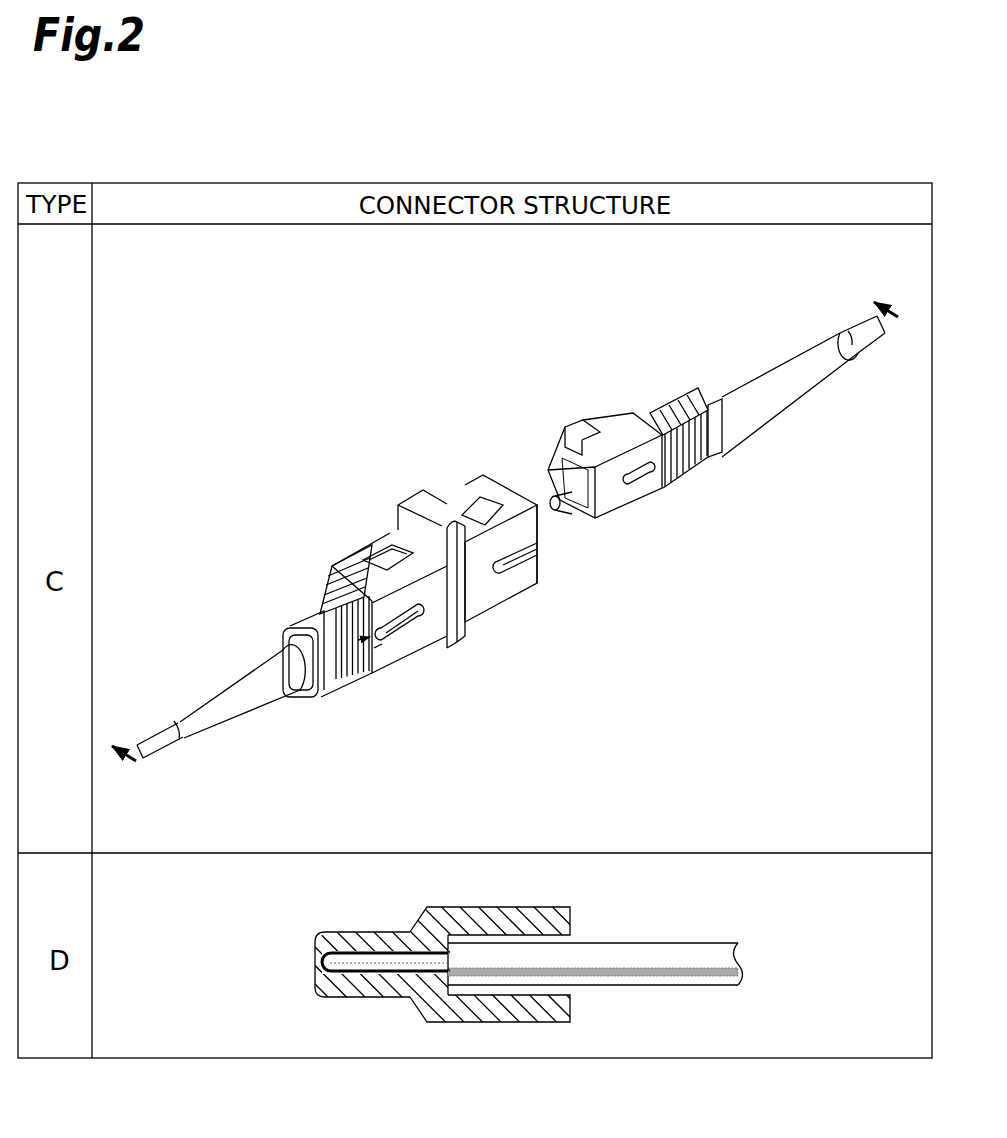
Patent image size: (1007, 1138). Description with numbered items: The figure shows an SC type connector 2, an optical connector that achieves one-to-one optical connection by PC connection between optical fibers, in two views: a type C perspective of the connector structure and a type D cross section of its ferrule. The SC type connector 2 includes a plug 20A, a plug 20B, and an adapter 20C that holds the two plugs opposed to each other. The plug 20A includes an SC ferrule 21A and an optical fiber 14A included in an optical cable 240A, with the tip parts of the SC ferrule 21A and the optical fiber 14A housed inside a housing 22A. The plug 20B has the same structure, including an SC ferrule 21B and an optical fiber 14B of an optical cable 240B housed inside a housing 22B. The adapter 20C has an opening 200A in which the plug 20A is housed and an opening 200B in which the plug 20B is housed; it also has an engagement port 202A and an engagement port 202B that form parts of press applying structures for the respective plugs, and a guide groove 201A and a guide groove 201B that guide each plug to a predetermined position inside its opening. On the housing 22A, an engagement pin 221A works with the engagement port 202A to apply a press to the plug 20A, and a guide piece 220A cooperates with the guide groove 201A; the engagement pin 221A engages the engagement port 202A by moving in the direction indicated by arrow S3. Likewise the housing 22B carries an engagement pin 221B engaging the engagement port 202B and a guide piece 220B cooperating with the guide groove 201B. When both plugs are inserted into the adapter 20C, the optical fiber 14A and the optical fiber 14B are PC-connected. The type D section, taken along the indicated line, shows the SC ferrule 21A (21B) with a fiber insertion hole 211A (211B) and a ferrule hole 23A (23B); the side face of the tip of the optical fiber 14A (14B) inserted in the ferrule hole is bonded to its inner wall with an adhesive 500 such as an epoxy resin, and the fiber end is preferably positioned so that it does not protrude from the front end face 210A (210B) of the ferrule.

The SC type connector 2 is at (340, 417).
The plug 20A is at (728, 316).
The plug 20B is at (365, 517).
The adapter 20C is at (486, 654).
The housing 22A is at (618, 498).
The housing 22B is at (340, 678).
The SC ferrule 21A is at (578, 505).
The SC ferrule 21B is at (386, 964).
The optical fiber 14A is at (560, 513).
The optical fiber 14B is at (534, 969).
The opening 200A is at (551, 573).
The opening 200B is at (367, 648).
The guide groove 201A is at (528, 556).
The guide groove 201B is at (384, 638).
The engagement port 202A is at (465, 492).
The engagement port 202B is at (398, 540).
The guide piece 220A is at (649, 487).
The guide piece 220B is at (405, 620).
The engagement pin 221A is at (712, 453).
The engagement pin 221B is at (333, 587).
The optical cable 240A is at (856, 345).
The optical cable 240B is at (160, 753).
The ferrule hole 23A is at (313, 956).
The ferrule hole 23B is at (465, 967).
The fiber insertion hole 211A is at (573, 935).
The fiber insertion hole 211B is at (490, 964).
The front end face 210A is at (313, 987).
The front end face 210B is at (320, 964).
The adhesive 500 is at (326, 988).
The direction of movement of engagement pin S3 is at (476, 492).